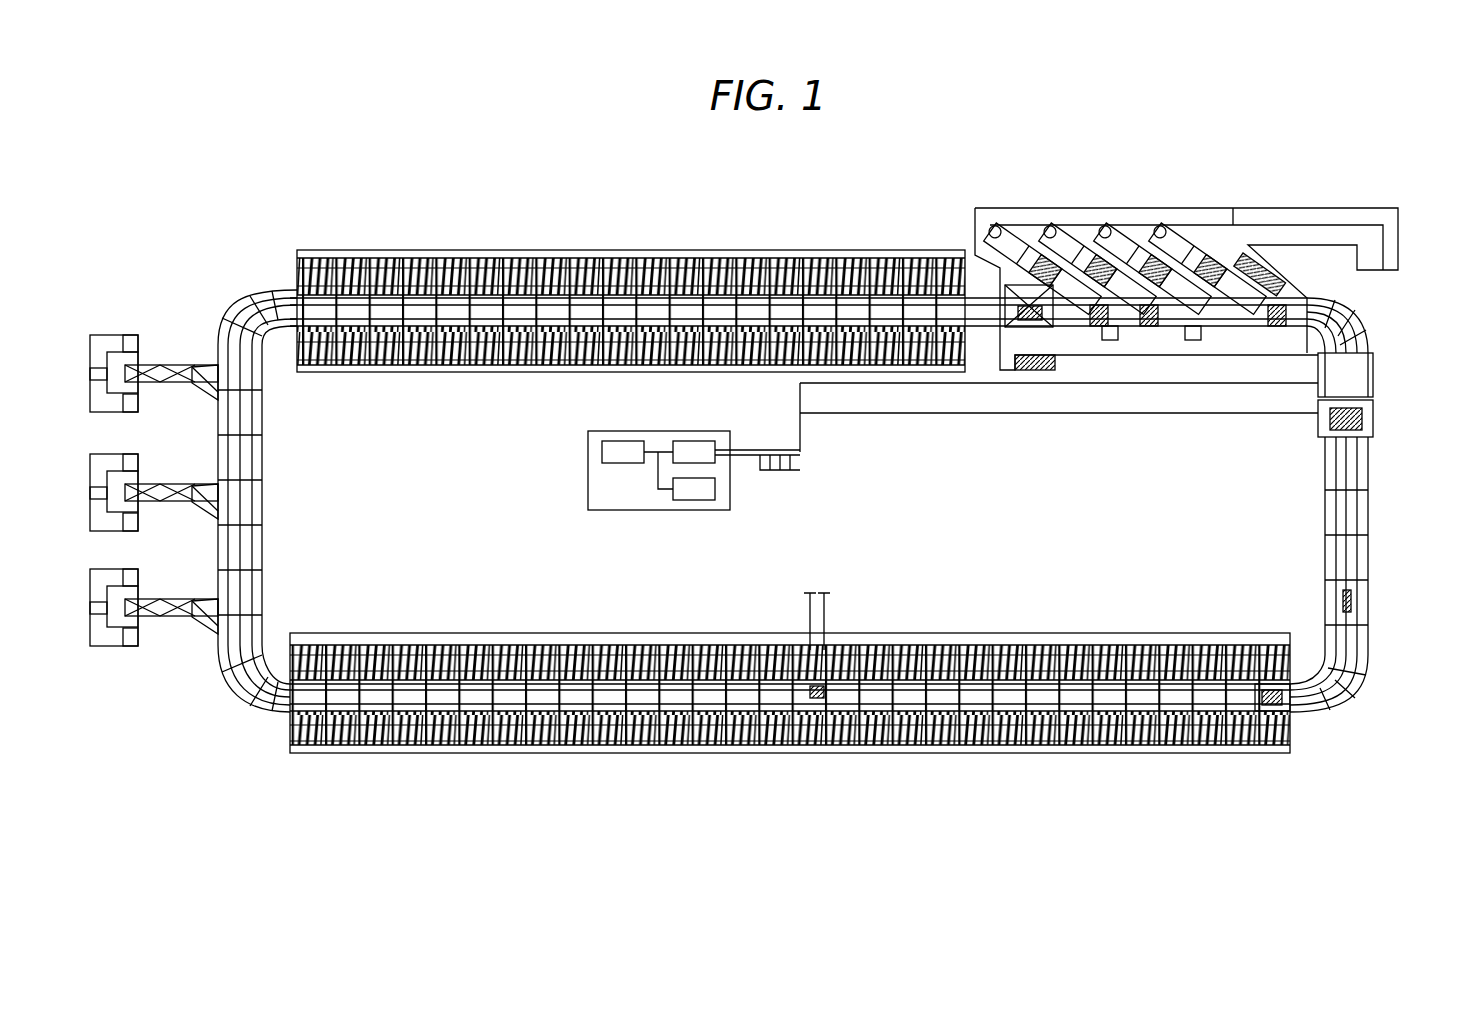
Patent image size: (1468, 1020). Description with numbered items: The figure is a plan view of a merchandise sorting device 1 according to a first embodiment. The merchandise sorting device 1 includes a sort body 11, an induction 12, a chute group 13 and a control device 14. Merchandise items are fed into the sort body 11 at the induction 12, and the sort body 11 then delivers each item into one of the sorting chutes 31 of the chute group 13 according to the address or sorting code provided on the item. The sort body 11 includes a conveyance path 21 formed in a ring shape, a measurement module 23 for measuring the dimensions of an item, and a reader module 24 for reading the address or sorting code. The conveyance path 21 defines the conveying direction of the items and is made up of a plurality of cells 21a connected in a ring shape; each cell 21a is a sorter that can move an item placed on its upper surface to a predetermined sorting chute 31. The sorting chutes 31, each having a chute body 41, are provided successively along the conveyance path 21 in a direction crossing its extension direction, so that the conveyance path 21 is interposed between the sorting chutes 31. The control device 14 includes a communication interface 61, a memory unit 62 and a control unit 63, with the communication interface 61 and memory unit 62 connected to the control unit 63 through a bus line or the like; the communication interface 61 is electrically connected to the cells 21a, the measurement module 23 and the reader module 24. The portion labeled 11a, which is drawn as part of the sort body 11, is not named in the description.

The merchandise sorting device 1 is at (1270, 193).
The sort body 11 is at (220, 692).
The curved section of transport path 11a is at (1370, 557).
The induction 12 is at (1142, 197).
The chute group 13 is at (681, 768).
The control device 14 is at (638, 472).
The conveyance path 21 is at (1234, 322).
The cell 21a is at (813, 703).
The measurement module 23 is at (1376, 388).
The reader module 24 is at (1376, 413).
The sorting chute 31 is at (330, 250).
The chute body 41 is at (1269, 768).
The communication interface 61 is at (694, 450).
The memory unit 62 is at (694, 495).
The control unit 63 is at (624, 450).